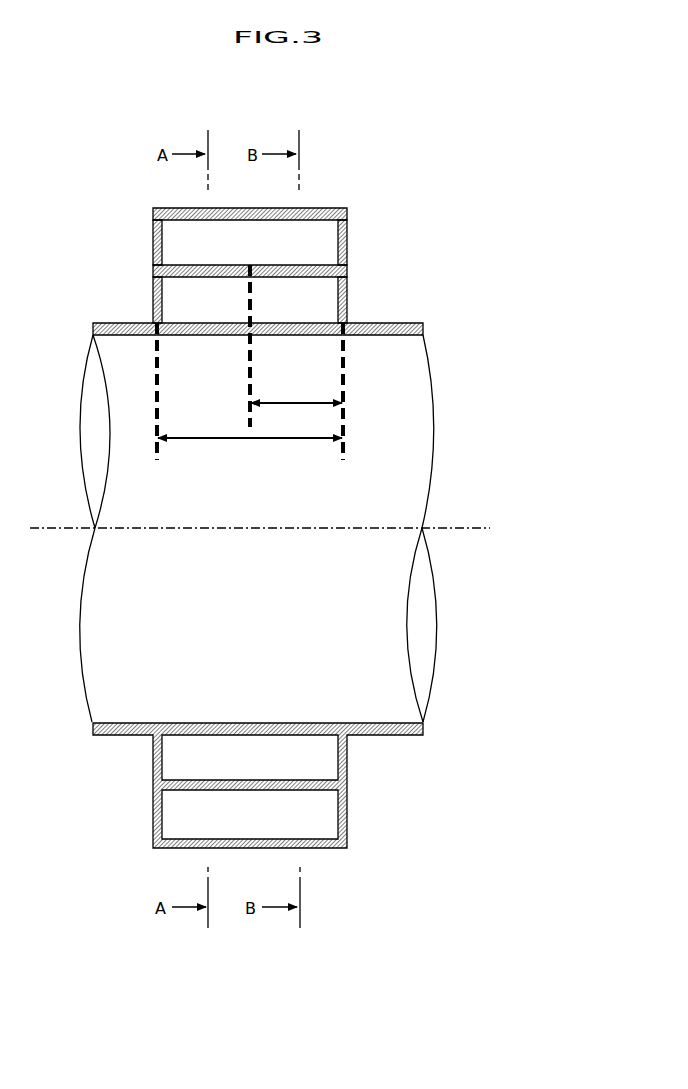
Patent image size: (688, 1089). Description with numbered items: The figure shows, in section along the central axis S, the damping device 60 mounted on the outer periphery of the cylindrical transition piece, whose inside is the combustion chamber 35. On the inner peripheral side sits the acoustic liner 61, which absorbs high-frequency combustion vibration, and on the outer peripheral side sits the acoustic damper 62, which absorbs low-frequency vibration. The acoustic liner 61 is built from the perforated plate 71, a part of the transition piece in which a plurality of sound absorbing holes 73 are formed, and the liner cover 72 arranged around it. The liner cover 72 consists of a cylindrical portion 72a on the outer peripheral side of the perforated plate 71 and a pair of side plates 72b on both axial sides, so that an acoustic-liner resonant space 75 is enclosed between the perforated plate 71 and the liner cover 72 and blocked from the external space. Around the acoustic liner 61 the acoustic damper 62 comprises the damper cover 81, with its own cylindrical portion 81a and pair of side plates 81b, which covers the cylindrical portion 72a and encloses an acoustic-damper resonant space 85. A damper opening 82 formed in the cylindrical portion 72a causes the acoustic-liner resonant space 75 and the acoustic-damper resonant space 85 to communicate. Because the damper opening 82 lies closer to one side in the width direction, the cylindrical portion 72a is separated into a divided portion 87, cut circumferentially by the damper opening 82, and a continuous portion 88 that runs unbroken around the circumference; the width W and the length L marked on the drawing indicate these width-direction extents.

The combustion chamber 35 is at (416, 398).
The damping device 60 is at (377, 180).
The acoustic liner 61 is at (348, 298).
The acoustic damper 62 is at (348, 240).
The perforated plate 71 is at (195, 338).
The liner cover 72 is at (152, 270).
The cylindrical portion 72a is at (192, 278).
The side plates 72b is at (152, 307).
The sound absorbing holes 73 is at (326, 337).
The acoustic-liner resonant space 75 is at (275, 300).
The damper cover 81 is at (152, 206).
The cylindrical portion 81a is at (192, 221).
The side plates 81b is at (152, 238).
The damper opening 82 is at (312, 278).
The acoustic-damper resonant space 85 is at (294, 242).
The divided portion 87 is at (323, 264).
The continuous portion 88 is at (237, 262).
The central axis S is at (477, 523).
The length L is at (296, 418).
The width W is at (250, 454).